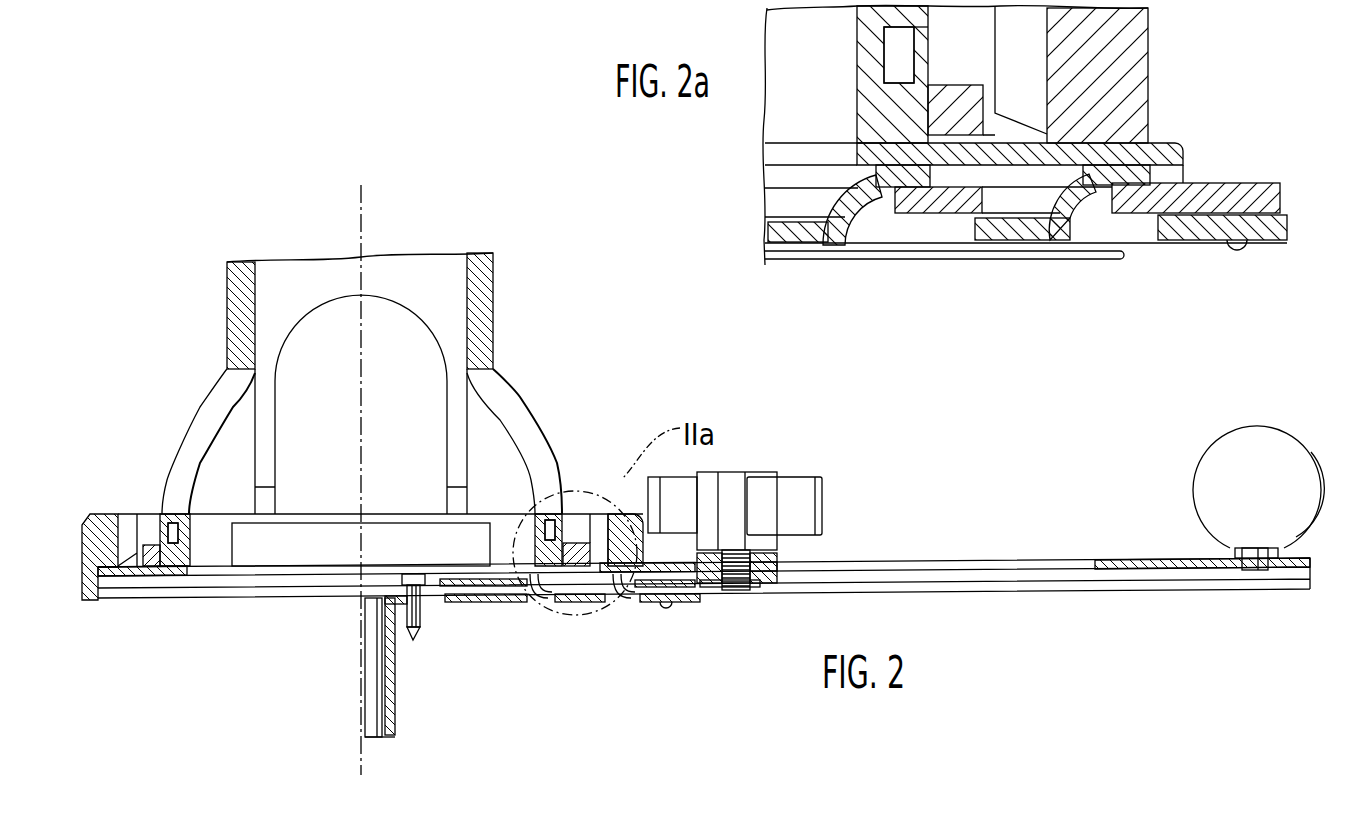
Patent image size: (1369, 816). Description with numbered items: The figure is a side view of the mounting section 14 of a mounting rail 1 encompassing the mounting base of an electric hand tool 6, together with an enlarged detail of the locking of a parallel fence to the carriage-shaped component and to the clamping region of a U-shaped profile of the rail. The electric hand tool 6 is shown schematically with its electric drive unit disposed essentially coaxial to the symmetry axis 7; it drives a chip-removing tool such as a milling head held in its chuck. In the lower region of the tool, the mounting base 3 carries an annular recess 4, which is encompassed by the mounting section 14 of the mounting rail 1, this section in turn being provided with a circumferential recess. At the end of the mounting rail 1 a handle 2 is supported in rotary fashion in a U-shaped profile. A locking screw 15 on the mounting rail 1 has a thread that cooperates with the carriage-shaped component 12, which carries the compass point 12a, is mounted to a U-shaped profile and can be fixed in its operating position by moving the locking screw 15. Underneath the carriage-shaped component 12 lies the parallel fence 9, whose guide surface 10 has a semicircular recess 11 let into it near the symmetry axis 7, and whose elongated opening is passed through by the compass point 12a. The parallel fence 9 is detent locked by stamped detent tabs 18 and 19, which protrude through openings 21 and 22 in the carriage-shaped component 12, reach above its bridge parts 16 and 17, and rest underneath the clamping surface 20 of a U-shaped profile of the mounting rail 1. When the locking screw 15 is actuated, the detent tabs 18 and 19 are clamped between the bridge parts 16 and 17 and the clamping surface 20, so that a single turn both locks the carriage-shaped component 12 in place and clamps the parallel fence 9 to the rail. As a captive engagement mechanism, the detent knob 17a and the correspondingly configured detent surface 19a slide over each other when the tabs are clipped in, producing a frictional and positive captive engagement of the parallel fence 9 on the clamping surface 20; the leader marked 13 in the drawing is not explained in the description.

In FIG. 2, the mounting rail 1 is at (1000, 604).
In FIG. 2a, the mounting rail 1 is at (1200, 148).
In FIG. 2, the handle 2 is at (1314, 487).
In FIG. 2, the mounting base 3 is at (178, 468).
In FIG. 2a, the mounting base 3 is at (870, 100).
In FIG. 2, the recess 4 is at (170, 535).
In FIG. 2a, the recess 4 is at (903, 58).
In FIG. 2, the electric hand tool 6 is at (240, 291).
In FIG. 2, the symmetry axis 7 is at (362, 225).
In FIG. 2, the parallel fence 9 is at (343, 722).
In FIG. 2, the guide surface 10 is at (362, 628).
In FIG. 2, the semicircular recess 11 is at (362, 692).
In FIG. 2, the carriage-shaped component 12 is at (434, 634).
In FIG. 2, the compass point 12a is at (414, 643).
In FIG. 2, the spring element 13 is at (574, 620).
In FIG. 2, the mounting section 14 is at (85, 528).
In FIG. 2a, the mounting section 14 is at (1130, 62).
In FIG. 2, the locking screw 15 is at (822, 487).
In FIG. 2, the bridge part 16 is at (557, 607).
In FIG. 2a, the bridge part 16 is at (920, 205).
In FIG. 2, the bridge part 17 is at (655, 600).
In FIG. 2, the detent knob 17a is at (670, 603).
In FIG. 2a, the detent knob 17a is at (1267, 182).
In FIG. 2, the detent tab 18 is at (513, 603).
In FIG. 2a, the detent tab 18 is at (812, 235).
In FIG. 2, the detent tab 19 is at (612, 603).
In FIG. 2a, the detent tab 19 is at (1075, 232).
In FIG. 2, the detent surface 19a is at (721, 646).
In FIG. 2a, the detent surface 19a is at (1245, 252).
In FIG. 2, the clamping surface 20 is at (592, 552).
In FIG. 2a, the clamping surface 20 is at (1008, 155).
In FIG. 2a, the opening 21 is at (777, 198).
In FIG. 2a, the opening 22 is at (1020, 200).